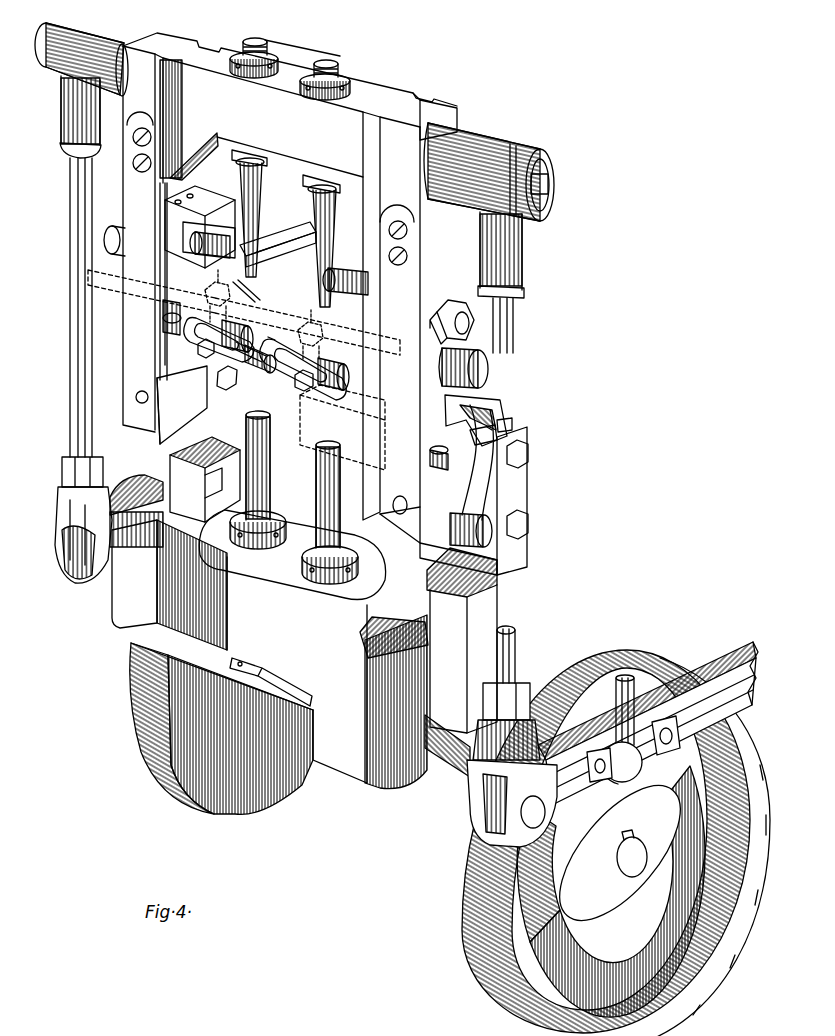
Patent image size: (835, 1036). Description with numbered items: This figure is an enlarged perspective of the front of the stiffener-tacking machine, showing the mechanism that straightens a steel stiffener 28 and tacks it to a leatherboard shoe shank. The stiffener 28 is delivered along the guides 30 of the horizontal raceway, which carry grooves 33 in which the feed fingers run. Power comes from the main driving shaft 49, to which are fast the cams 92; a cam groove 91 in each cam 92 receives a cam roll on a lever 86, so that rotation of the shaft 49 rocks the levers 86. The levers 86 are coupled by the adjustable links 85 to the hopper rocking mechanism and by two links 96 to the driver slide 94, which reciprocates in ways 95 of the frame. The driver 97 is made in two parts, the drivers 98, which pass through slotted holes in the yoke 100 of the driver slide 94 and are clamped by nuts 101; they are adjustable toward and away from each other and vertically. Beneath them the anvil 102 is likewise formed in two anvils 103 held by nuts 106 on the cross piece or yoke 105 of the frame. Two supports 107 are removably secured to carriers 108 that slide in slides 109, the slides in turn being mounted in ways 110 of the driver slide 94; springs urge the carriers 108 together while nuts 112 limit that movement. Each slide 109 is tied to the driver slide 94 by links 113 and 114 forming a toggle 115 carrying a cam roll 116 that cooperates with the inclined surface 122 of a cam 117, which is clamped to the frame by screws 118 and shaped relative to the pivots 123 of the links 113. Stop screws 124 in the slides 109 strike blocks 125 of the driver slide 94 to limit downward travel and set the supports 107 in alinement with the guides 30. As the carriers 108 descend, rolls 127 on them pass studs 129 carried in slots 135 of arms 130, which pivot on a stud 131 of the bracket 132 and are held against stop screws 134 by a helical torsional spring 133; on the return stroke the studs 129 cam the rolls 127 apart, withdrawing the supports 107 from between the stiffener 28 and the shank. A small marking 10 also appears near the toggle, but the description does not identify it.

The pin 10 is at (499, 419).
The stiffeners 28 is at (280, 327).
The guides 30 is at (300, 250).
The grooves 33 is at (277, 236).
The main driving shaft 49 is at (450, 768).
The links 85 is at (626, 675).
The levers 86 is at (72, 570).
The cam grooves 91 is at (676, 898).
The cams 92 is at (203, 805).
The driver slide 94 is at (438, 110).
The ways 95 is at (175, 470).
The links 96 is at (78, 258).
The driver 97 is at (302, 43).
The drivers 98 is at (258, 40).
The yoke 100 is at (290, 231).
The nuts 101 is at (246, 52).
The anvil 102 is at (309, 494).
The anvils 103 is at (268, 442).
The cross piece or yoke 105 is at (332, 750).
The nuts 106 is at (232, 530).
The supports 107 is at (380, 315).
The carriers 108 is at (200, 220).
The slides 109 is at (190, 203).
The ways 110 is at (135, 120).
The nuts 112 is at (478, 308).
The link 113 is at (114, 238).
The link 114 is at (538, 477).
The toggle 115 is at (490, 409).
The cam roll 116 is at (500, 433).
The cam 117 is at (512, 497).
The screws 118 is at (528, 455).
The inclined surface 122 is at (512, 422).
The pivots 123 is at (488, 366).
The stop screws 124 is at (175, 348).
The blocks 125 is at (175, 378).
The rolls 127 is at (335, 260).
The studs 129 is at (383, 368).
The arms 130 is at (220, 372).
The stud 131 is at (226, 392).
The bracket 132 is at (160, 322).
The helical torsional spring 133 is at (266, 375).
The stop-screws 134 is at (205, 300).
The slots 135 is at (330, 406).